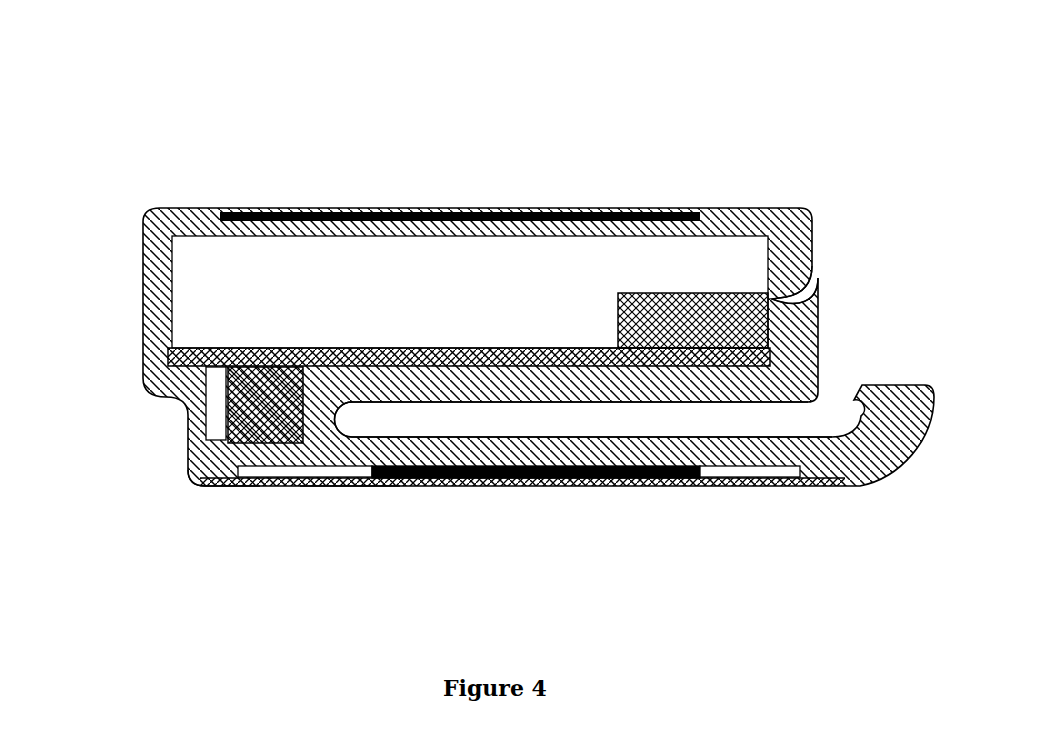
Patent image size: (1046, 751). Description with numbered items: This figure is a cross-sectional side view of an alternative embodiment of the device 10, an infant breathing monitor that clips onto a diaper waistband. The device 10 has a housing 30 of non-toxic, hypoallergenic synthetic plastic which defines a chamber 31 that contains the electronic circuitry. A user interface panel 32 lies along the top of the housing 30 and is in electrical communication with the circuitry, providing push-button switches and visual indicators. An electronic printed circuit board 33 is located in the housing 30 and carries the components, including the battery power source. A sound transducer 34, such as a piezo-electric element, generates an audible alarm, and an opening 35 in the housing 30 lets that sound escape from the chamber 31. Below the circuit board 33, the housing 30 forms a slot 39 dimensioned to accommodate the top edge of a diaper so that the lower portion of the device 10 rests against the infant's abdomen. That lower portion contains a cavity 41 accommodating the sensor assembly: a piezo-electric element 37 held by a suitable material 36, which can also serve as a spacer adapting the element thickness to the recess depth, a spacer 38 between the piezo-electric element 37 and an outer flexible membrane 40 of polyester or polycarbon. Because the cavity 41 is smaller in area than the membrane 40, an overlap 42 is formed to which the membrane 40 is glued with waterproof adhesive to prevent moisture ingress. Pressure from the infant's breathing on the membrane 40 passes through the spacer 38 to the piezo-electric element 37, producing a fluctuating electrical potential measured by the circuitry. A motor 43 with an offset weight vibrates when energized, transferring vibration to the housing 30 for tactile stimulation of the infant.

The device 10 is at (682, 183).
The housing 30 is at (193, 207).
The chamber 31 is at (283, 260).
The user interface panel 32 is at (370, 210).
The electronic printed circuit board 33 is at (459, 348).
The sound transducer 34 is at (618, 293).
The opening 35 is at (802, 287).
The material 36 is at (705, 472).
The piezo-electric element 37 is at (700, 480).
The spacer 38 is at (688, 486).
The slot 39 is at (443, 420).
The outer flexible membrane 40 is at (345, 482).
The cavity 41 is at (300, 470).
The overlap 42 is at (218, 484).
The motor 43 is at (206, 430).